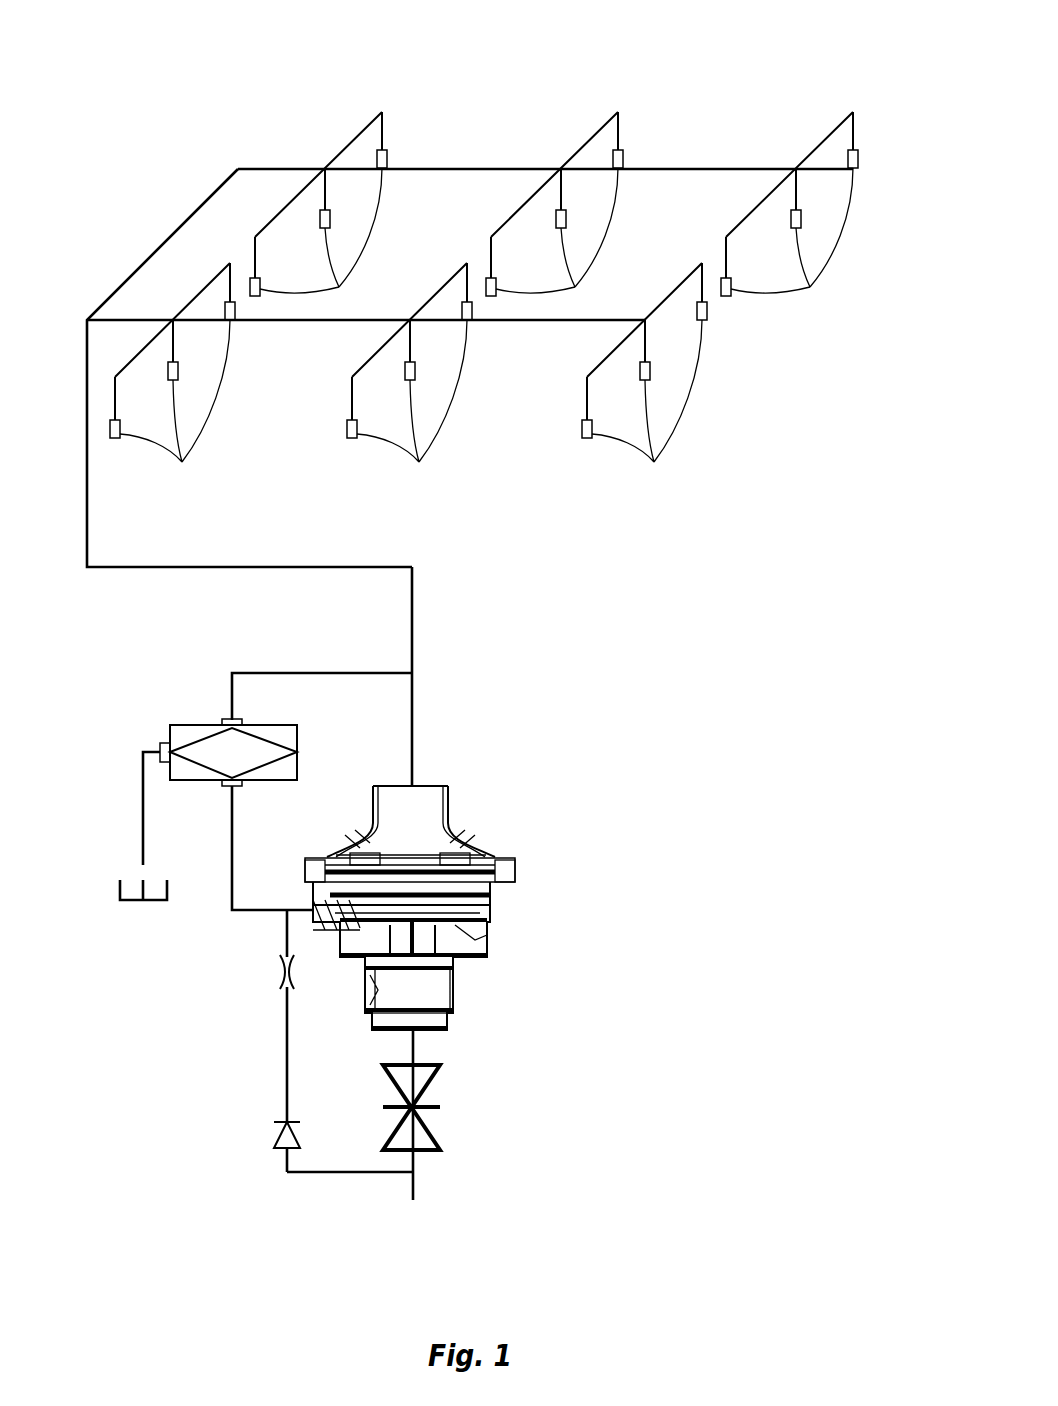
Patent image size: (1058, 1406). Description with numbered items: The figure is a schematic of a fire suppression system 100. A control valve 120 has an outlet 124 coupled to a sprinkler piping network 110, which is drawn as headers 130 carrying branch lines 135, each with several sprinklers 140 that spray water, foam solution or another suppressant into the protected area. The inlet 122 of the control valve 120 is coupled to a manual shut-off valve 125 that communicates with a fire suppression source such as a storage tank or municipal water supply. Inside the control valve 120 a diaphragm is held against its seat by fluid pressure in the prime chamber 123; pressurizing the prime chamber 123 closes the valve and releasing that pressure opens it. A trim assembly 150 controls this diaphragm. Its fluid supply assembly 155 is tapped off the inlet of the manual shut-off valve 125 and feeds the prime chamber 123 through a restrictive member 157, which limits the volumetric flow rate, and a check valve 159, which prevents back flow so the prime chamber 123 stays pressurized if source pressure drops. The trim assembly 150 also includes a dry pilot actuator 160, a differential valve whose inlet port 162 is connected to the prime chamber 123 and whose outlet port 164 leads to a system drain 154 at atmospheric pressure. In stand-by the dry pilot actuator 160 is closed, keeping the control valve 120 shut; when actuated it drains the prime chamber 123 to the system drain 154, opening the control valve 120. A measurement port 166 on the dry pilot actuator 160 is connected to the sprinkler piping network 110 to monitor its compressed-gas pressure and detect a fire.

The fire suppression system 100 is at (895, 115).
The sprinkler piping network 110 is at (722, 326).
The control valve 120 is at (478, 837).
The inlet 122 is at (430, 1040).
The prime chamber 123 is at (445, 909).
The outlet 124 is at (425, 786).
The manual shut-off valve 125 is at (441, 1128).
The header 130 is at (151, 256).
The branch line 135 is at (676, 171).
The sprinkler 140 is at (484, 303).
The trim assembly 150 is at (156, 938).
The system drain 154 is at (118, 893).
The fluid supply assembly 155 is at (199, 955).
The restrictive member 157 is at (279, 972).
The check valve 159 is at (275, 1132).
The dry pilot actuator 160 is at (185, 725).
The inlet port 162 is at (243, 786).
The outlet port 164 is at (160, 752).
The measurement port 166 is at (243, 722).